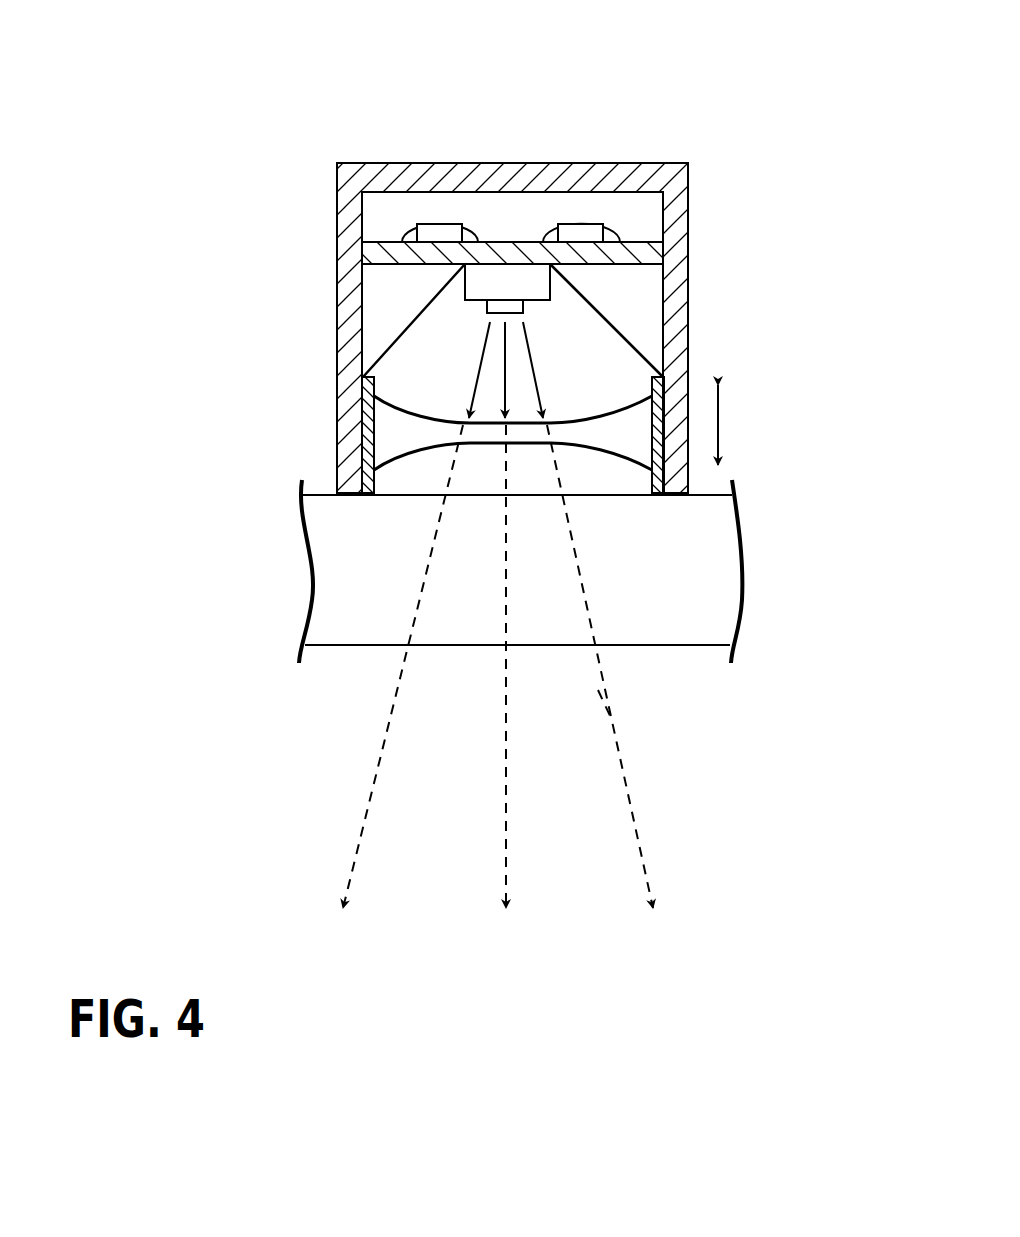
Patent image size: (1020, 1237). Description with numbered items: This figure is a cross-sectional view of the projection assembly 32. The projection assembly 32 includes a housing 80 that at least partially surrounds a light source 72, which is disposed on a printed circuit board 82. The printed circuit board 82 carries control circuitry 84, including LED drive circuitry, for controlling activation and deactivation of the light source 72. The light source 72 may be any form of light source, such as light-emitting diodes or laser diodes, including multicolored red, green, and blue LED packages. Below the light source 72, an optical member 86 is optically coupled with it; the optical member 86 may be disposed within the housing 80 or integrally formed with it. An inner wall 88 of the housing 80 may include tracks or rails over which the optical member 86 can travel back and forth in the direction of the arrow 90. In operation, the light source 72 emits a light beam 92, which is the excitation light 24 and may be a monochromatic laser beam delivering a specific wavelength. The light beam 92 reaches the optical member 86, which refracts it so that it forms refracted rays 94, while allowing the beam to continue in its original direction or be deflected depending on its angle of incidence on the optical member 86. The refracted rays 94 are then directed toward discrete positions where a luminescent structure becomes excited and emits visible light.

The projection assembly 32 is at (740, 117).
The housing 80 is at (627, 162).
The printed circuit board 82 is at (383, 255).
The control circuitry 84 is at (439, 233).
The light source 72 is at (515, 268).
The inner wall 88 is at (372, 400).
The optical member 86 is at (400, 435).
The light beam 92 is at (503, 348).
The excitation light 24 is at (535, 365).
The refracted rays 94 is at (611, 716).
The arrow 90 is at (720, 428).